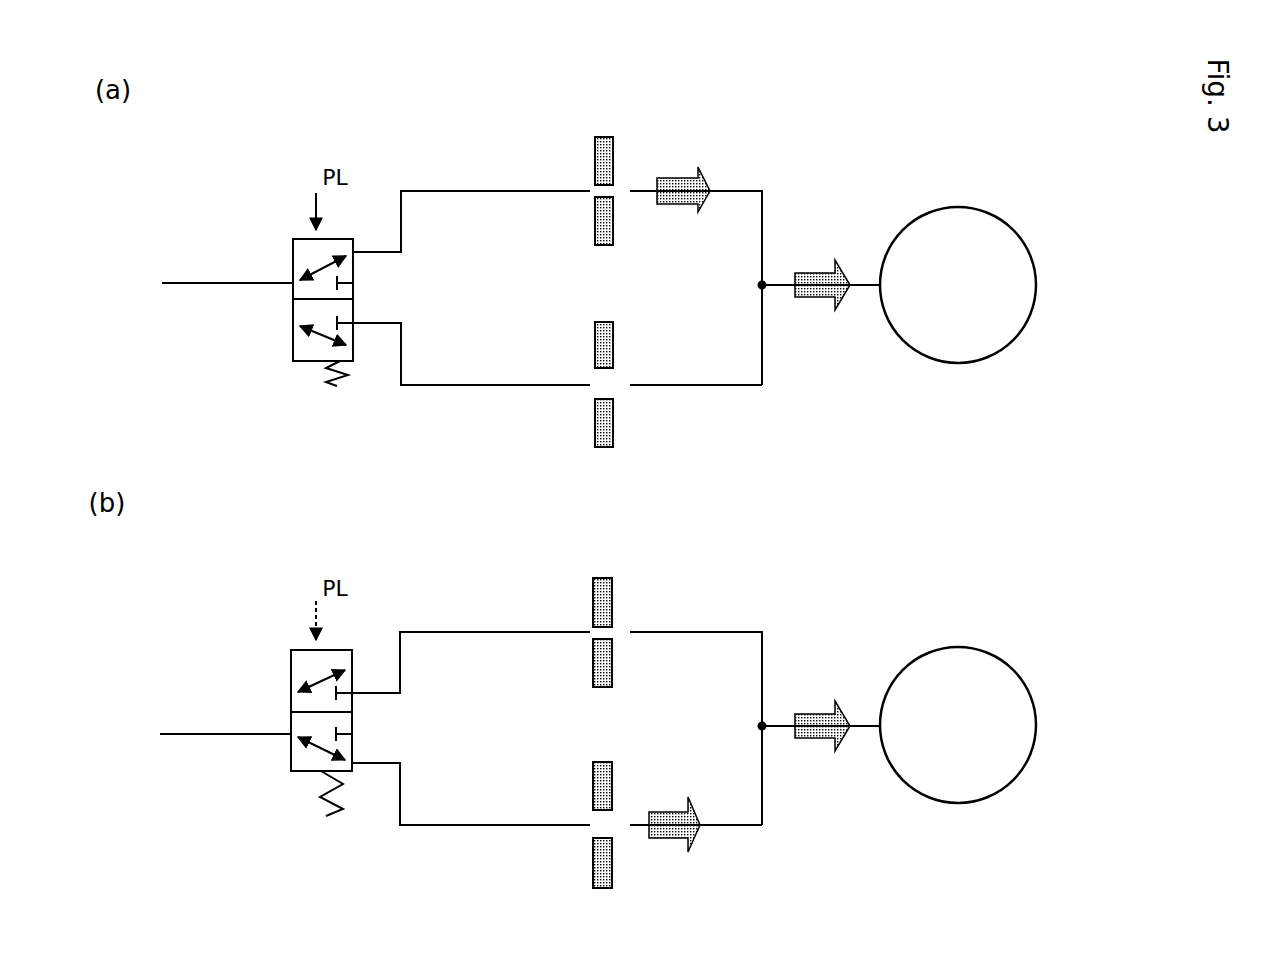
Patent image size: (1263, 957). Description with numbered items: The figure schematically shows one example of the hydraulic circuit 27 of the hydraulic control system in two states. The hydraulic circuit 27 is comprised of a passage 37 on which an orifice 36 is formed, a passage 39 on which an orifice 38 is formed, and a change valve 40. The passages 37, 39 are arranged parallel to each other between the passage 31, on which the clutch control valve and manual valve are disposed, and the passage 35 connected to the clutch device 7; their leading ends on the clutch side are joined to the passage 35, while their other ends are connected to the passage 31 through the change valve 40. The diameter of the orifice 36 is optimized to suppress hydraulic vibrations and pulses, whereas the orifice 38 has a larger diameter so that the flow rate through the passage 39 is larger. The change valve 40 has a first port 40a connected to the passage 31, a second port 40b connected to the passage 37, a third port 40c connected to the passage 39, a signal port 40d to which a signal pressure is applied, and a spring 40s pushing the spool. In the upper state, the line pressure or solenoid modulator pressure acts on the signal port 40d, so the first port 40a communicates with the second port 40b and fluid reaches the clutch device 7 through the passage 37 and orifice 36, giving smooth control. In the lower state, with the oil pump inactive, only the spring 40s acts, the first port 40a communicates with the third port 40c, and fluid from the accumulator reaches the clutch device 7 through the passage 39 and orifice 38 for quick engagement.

The hydraulic circuit 27 is at (294, 142).
The passage 31 is at (180, 283).
The passage 35 is at (780, 287).
The orifice 36 is at (613, 142).
The passage 37 is at (466, 191).
The orifice 38 is at (595, 425).
The passage 39 is at (438, 385).
The change valve 40 is at (293, 318).
The first port 40a is at (293, 283).
The second port 40b is at (353, 252).
The third port 40c is at (353, 323).
The signal port 40d is at (315, 237).
The spring 40s is at (332, 386).
The clutch device 7 is at (960, 363).